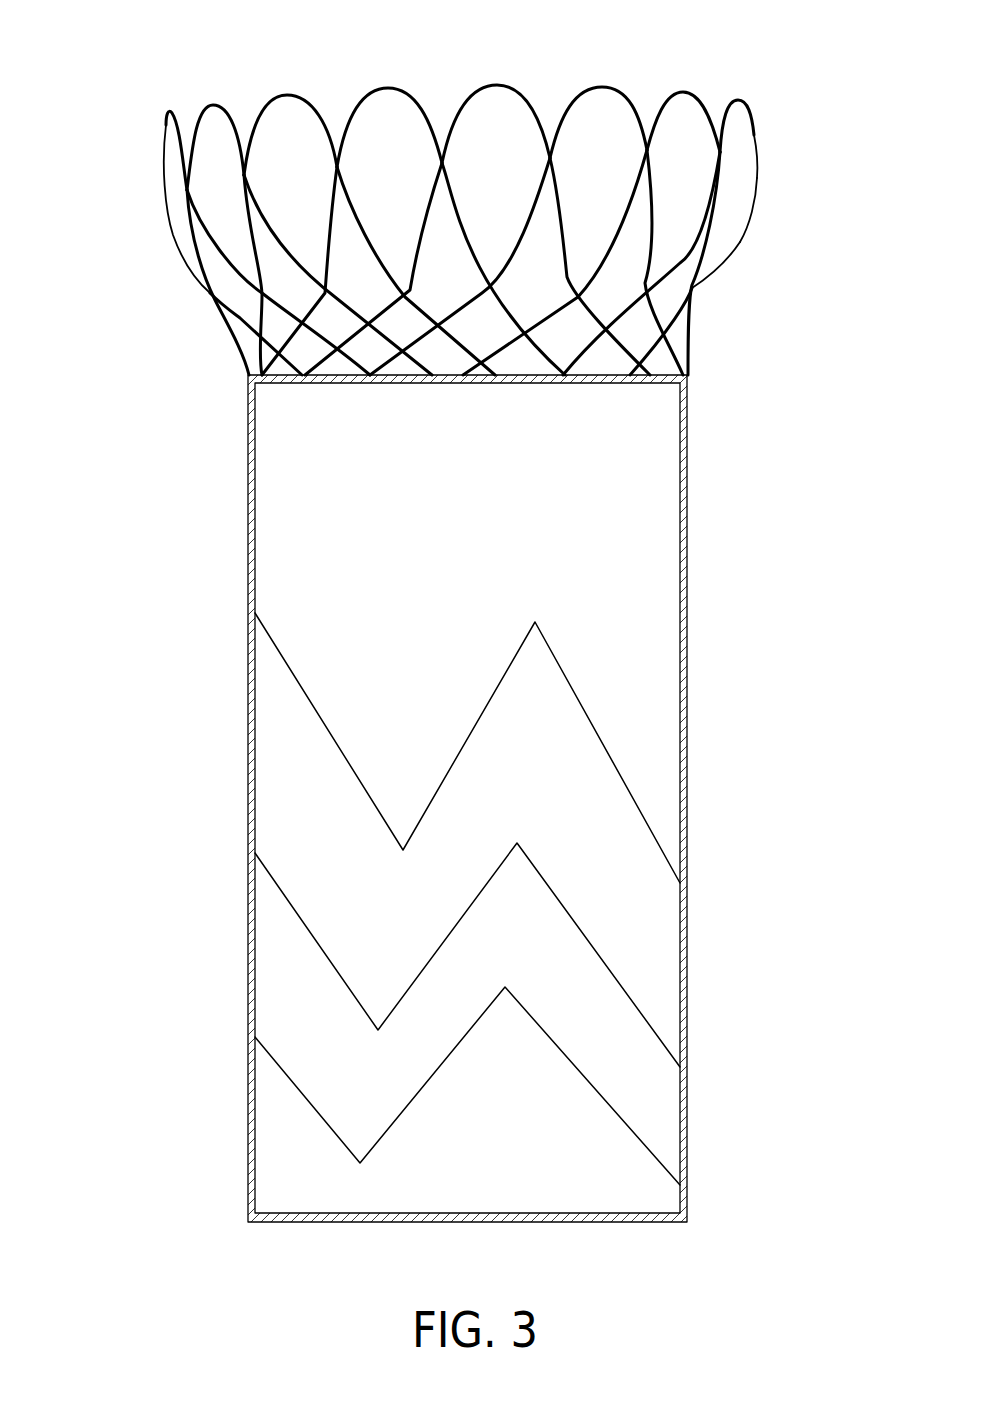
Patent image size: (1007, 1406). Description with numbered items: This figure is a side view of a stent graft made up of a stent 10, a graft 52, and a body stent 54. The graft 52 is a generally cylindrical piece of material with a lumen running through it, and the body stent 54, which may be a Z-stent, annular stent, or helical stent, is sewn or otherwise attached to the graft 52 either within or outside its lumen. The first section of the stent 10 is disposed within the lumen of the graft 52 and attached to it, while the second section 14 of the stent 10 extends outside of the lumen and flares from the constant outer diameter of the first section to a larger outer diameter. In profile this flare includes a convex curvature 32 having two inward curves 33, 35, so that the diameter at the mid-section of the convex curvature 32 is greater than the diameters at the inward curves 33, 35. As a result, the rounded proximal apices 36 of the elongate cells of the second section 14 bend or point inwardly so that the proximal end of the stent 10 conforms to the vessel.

The stent 10 is at (780, 72).
The second section 14 is at (127, 92).
The convex curvature 32 is at (757, 190).
The inward curve 33 is at (737, 245).
The inward curve 35 is at (752, 128).
The rounded proximal apex 36 is at (168, 112).
The graft 52 is at (760, 488).
The body stent 54 is at (607, 747).